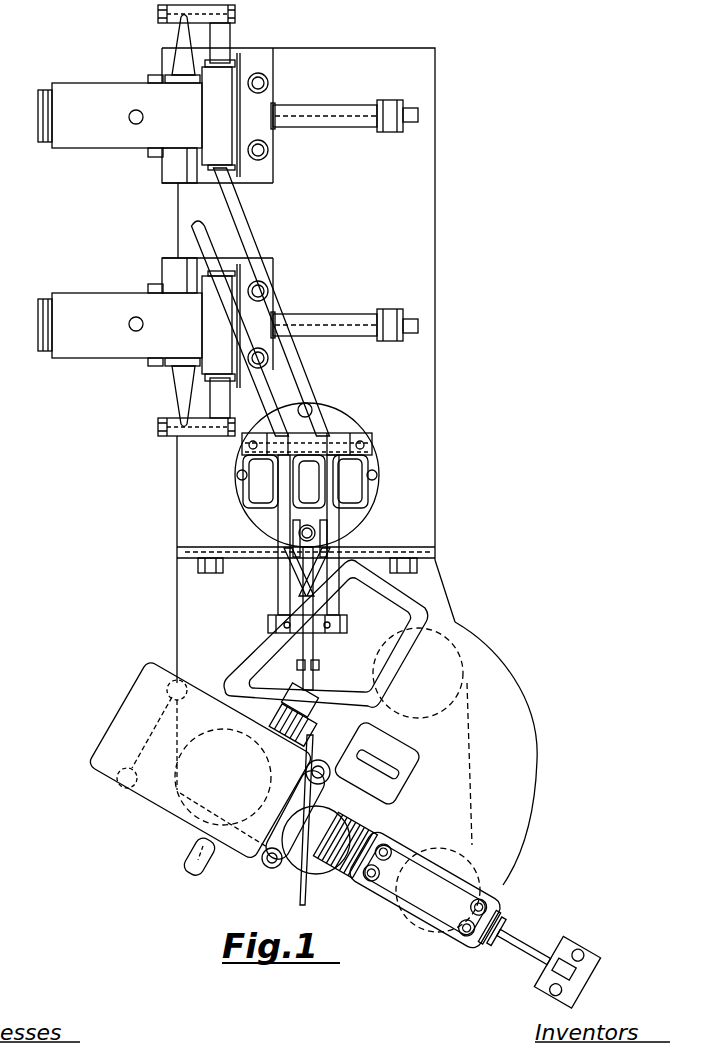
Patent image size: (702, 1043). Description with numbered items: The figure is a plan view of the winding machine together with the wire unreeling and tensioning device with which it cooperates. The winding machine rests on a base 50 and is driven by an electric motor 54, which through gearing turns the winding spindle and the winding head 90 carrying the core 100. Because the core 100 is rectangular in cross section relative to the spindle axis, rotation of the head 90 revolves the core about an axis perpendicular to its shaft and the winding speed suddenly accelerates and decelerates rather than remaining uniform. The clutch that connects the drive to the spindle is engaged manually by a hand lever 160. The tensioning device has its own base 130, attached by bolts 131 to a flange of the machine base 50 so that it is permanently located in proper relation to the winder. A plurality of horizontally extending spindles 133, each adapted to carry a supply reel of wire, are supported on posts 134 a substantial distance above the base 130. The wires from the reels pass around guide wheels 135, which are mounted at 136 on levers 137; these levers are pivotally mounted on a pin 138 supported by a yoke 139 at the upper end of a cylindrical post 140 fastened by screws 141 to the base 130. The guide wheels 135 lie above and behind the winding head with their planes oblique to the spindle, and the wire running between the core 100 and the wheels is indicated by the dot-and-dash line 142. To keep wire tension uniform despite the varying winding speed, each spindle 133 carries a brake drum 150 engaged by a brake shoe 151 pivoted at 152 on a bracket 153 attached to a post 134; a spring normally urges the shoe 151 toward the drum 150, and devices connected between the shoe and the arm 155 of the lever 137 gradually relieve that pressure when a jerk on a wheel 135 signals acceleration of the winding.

The base 50 is at (177, 605).
The electric motor 54 is at (380, 746).
The winding head 90 is at (332, 778).
The core 100 is at (370, 820).
The base 130 is at (177, 468).
The bolts 131 is at (197, 565).
The spindles 133 is at (338, 120).
The posts 134 is at (170, 163).
The guide wheels 135 is at (308, 672).
The mounting 136 is at (340, 622).
The levers 137 is at (278, 522).
The pin 138 is at (375, 447).
The yoke 139 is at (253, 482).
The cylindrical post 140 is at (348, 487).
The screws 141 is at (307, 405).
The wire 142 is at (313, 723).
The brake drum 150 is at (227, 78).
The brake shoe 151 is at (223, 35).
The pivot 152 is at (158, 13).
The bracket 153 is at (180, 37).
The arm 155 is at (242, 225).
The hand lever 160 is at (202, 867).